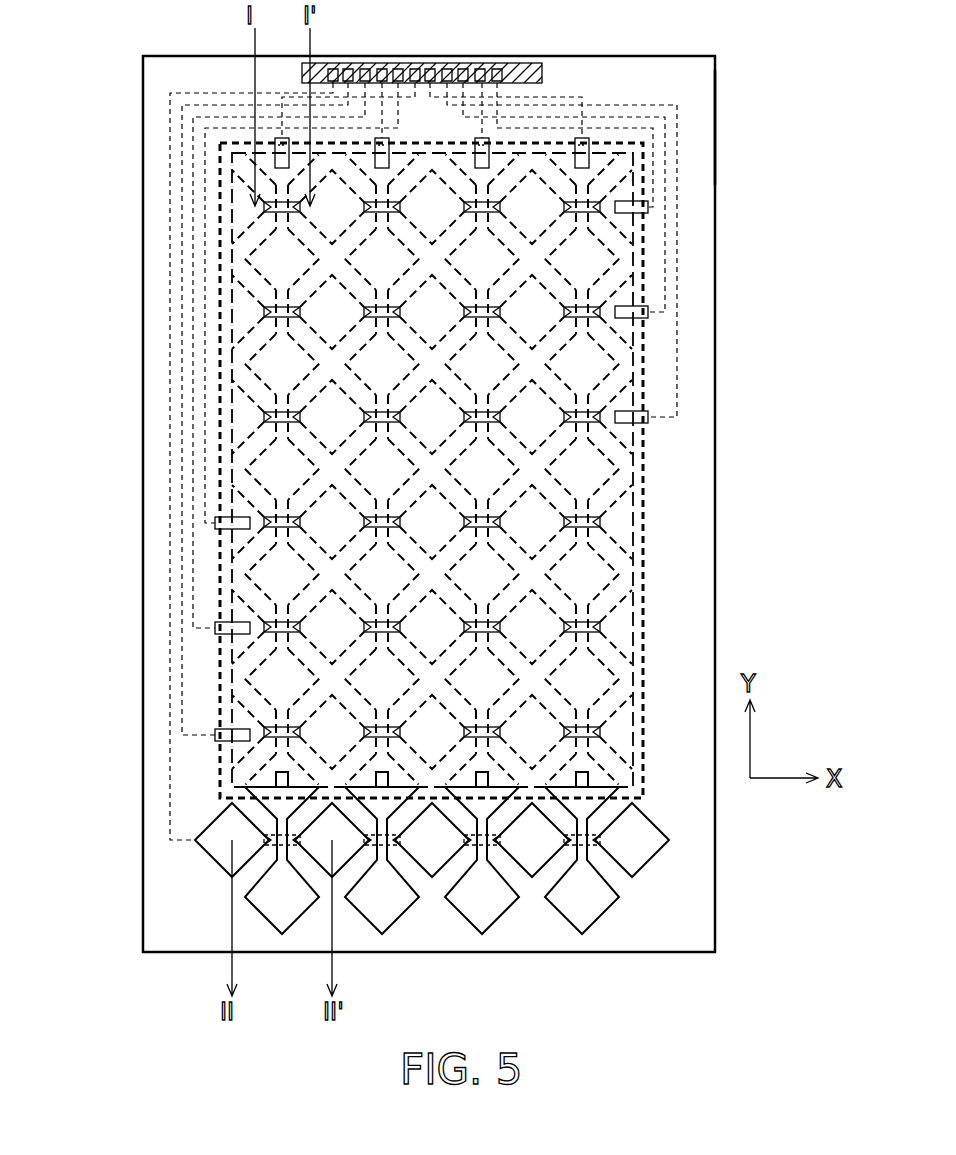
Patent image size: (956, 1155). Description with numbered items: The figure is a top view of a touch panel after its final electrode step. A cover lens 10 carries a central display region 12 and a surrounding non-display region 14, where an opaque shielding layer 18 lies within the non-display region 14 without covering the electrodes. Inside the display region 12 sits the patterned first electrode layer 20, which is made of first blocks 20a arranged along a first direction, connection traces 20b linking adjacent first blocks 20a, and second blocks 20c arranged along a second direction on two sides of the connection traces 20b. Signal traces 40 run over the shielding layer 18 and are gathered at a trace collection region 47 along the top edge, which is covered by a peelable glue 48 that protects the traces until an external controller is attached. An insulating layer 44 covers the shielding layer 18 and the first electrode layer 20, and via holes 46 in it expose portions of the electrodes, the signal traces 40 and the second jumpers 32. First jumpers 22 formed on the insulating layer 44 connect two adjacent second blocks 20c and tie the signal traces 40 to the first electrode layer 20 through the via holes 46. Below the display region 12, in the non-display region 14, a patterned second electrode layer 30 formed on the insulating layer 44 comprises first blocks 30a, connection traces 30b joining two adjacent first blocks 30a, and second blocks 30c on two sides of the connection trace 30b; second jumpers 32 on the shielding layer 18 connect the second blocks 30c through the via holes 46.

The cover lens 10 is at (718, 203).
The display region 12 is at (615, 150).
The non-display region 14 is at (717, 98).
The shielding layer 18 is at (712, 168).
The patterned first electrode layer 20 is at (327, 461).
The first blocks 20a is at (245, 233).
The connection traces 20b is at (285, 214).
The second blocks 20c is at (248, 198).
The first jumpers 22 is at (592, 294).
The patterned second electrode layer 30 is at (327, 853).
The first blocks 30a is at (273, 897).
The connection traces 30b is at (277, 860).
The second blocks 30c is at (223, 847).
The second jumpers 32 is at (596, 846).
The signal traces 40 is at (683, 238).
The insulating layer 44 is at (715, 140).
The via holes 46 is at (263, 307).
The trace collection region 47 is at (525, 63).
The peelable glue 48 is at (320, 63).